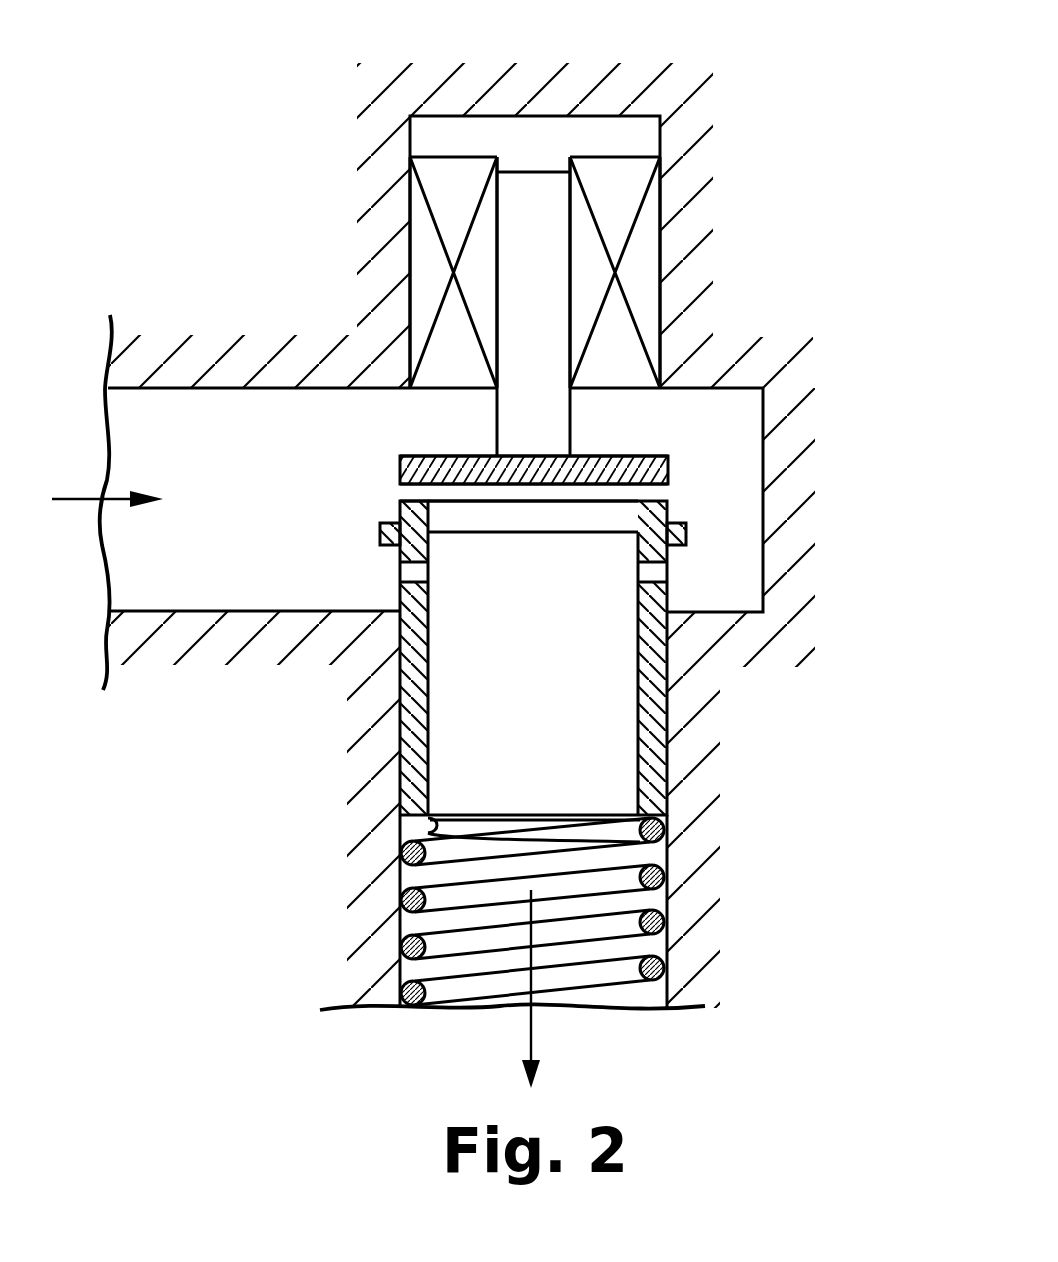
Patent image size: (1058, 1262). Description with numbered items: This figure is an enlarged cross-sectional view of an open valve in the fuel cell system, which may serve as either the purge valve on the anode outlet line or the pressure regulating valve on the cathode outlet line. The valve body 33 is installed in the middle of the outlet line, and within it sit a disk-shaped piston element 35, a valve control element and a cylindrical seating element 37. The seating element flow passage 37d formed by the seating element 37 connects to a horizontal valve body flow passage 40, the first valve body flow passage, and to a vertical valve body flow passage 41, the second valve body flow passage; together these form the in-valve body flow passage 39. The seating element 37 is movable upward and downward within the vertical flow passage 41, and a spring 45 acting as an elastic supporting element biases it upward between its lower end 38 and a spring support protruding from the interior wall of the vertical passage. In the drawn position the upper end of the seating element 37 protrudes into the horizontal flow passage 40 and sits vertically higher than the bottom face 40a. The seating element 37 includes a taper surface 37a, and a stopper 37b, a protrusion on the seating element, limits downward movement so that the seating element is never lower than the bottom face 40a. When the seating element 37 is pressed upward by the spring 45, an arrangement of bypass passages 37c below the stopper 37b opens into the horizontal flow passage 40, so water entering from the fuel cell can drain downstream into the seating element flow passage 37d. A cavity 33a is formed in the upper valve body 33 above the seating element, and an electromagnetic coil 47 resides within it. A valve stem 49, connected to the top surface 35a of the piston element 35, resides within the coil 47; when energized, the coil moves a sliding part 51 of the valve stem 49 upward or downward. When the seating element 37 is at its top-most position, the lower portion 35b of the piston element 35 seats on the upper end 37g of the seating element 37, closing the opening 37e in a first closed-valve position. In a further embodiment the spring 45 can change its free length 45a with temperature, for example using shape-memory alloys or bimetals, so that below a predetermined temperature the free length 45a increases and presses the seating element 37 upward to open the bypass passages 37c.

The valve body 33 is at (330, 733).
The cavity 33a is at (410, 180).
The piston element 35 is at (655, 529).
The top surface of the piston element 35a is at (664, 481).
The lower portion of the piston element 35b is at (642, 484).
The seating element 37 is at (572, 538).
The taper surface 37a is at (416, 511).
The stopper 37b is at (688, 536).
The bypass passages 37c is at (668, 571).
The seating element flow passage 37d is at (430, 702).
The opening 37e is at (595, 515).
The upper end of the seating element 37g is at (412, 496).
The lower end of the seating element 38 is at (435, 834).
The in-valve body flow passage 39 is at (392, 738).
The horizontal valve body flow passage 40 is at (240, 587).
The bottom face 40a is at (170, 612).
The vertical valve body flow passage 41 is at (431, 878).
The spring 45 is at (611, 871).
The free length of the spring 45a is at (636, 814).
The electromagnetic coil 47 is at (620, 207).
The valve stem 49 is at (542, 183).
The sliding part of the valve stem 51 is at (493, 258).